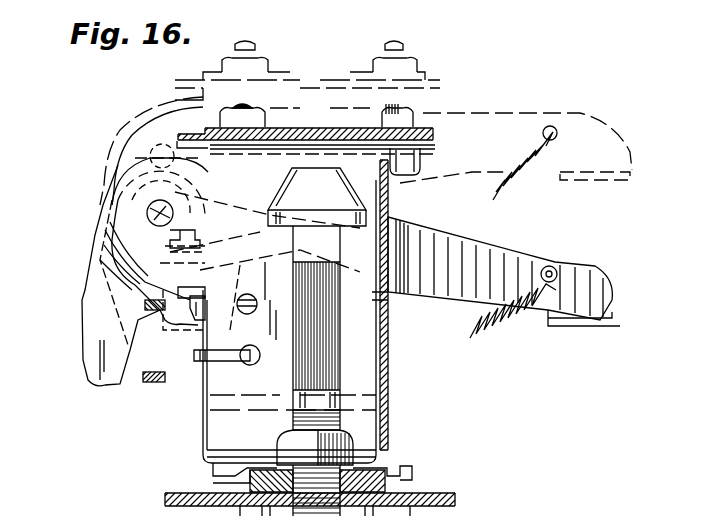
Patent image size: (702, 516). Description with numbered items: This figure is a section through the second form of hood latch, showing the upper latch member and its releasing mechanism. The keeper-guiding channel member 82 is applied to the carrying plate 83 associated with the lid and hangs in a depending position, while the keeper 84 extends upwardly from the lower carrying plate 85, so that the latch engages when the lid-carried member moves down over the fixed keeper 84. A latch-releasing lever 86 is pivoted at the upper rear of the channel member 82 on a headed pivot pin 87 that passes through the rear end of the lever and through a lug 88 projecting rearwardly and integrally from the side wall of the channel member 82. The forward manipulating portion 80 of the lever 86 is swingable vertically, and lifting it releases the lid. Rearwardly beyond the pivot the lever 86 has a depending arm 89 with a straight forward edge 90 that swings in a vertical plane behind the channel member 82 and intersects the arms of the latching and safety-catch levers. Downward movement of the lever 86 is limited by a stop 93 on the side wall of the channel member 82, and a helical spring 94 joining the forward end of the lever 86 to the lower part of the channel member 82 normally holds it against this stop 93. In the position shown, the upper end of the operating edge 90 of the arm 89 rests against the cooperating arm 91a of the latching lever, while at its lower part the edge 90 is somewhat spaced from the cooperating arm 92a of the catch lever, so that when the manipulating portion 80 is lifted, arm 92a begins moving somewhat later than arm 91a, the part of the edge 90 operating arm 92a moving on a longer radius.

The manipulating portion 80 is at (562, 268).
The keeper-guiding channel member 82 is at (388, 374).
The carrying plate 83 is at (440, 142).
The keeper 84 is at (310, 242).
The lower carrying plate 85 is at (440, 493).
The latch-releasing lever 86 is at (400, 226).
The headed pivot pin 87 is at (168, 208).
The lug 88 is at (133, 180).
The depending arm 89 is at (96, 292).
The straight forward edge 90 is at (136, 328).
The cooperating arm of latching lever 91a is at (210, 318).
The cooperating arm of catch lever 92a is at (153, 382).
The stop 93 is at (386, 308).
The helical spring 94 is at (505, 330).